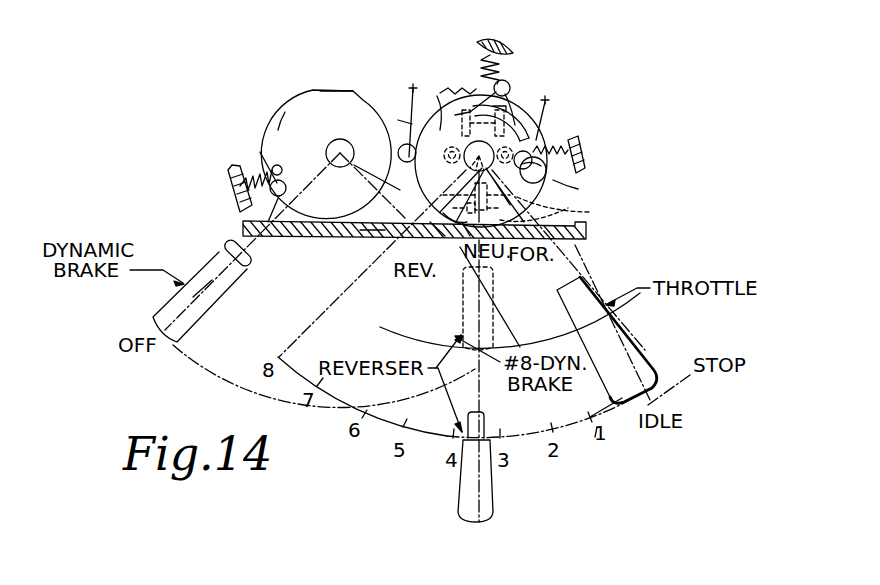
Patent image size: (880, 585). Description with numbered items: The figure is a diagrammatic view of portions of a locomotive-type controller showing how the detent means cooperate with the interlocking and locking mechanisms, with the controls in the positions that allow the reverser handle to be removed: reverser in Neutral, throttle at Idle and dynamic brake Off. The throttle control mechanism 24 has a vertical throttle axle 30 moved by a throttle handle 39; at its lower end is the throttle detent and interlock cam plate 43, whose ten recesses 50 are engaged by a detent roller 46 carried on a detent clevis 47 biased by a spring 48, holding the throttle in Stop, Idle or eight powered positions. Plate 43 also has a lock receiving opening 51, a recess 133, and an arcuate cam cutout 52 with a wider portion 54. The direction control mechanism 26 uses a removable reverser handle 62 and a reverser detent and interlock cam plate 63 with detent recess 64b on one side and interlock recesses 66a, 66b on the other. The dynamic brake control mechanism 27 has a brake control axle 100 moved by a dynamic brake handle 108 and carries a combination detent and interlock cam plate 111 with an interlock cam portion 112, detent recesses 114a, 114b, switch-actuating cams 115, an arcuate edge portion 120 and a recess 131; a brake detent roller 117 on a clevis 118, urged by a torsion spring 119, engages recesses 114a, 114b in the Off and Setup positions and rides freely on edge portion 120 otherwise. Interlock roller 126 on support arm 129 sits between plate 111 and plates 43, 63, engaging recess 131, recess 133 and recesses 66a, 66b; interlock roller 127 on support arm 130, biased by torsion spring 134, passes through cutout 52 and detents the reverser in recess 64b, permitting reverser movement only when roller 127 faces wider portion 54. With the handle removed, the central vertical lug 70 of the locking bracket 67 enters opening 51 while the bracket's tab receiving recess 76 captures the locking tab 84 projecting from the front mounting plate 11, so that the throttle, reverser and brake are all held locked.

The front mounting plate 11 is at (586, 230).
The throttle control mechanism 24 is at (534, 101).
The direction control mechanism 26 is at (472, 103).
The dynamic brake control mechanism 27 is at (280, 118).
The throttle axle 30 is at (458, 120).
The throttle handle 39 is at (638, 357).
The throttle detent and interlock cam plate 43 is at (549, 126).
The detent roller 46 is at (508, 90).
The detent clevis 47 is at (472, 75).
The spring 48 is at (478, 47).
The recesses 50 is at (437, 96).
The lock receiving opening 51 is at (466, 166).
The arcuate cam cutout 52 is at (549, 103).
The wider portion 54 is at (578, 189).
The reverser handle 62 is at (495, 298).
The reverser detent and interlock cam plate 63 is at (403, 144).
The detent recess 64b is at (548, 190).
The interlock recess 66a is at (463, 118).
The interlock recess 66b is at (440, 178).
The locking bracket 67 is at (568, 209).
The central vertical lug 70 is at (448, 200).
The tab receiving recess 76 is at (466, 236).
The locking tab 84 is at (427, 236).
The brake control axle 100 is at (341, 140).
The dynamic brake handle 108 is at (174, 308).
The combination detent and interlock cam plate 111 is at (310, 105).
The interlock cam portion 112 is at (374, 236).
The detent recess 114a is at (300, 181).
The detent recess 114b is at (284, 168).
The cams 115 is at (347, 90).
The brake detent roller 117 is at (288, 236).
The clevis 118 is at (258, 160).
The torsion spring 119 is at (231, 174).
The arcuate edge portion 120 is at (287, 108).
The interlock roller 126 is at (398, 152).
The interlock roller 127 is at (547, 170).
The support arm 129 is at (413, 84).
The support arm 130 is at (551, 106).
The recess 131 is at (400, 160).
The recess 133 is at (406, 114).
The torsion spring 134 is at (575, 140).